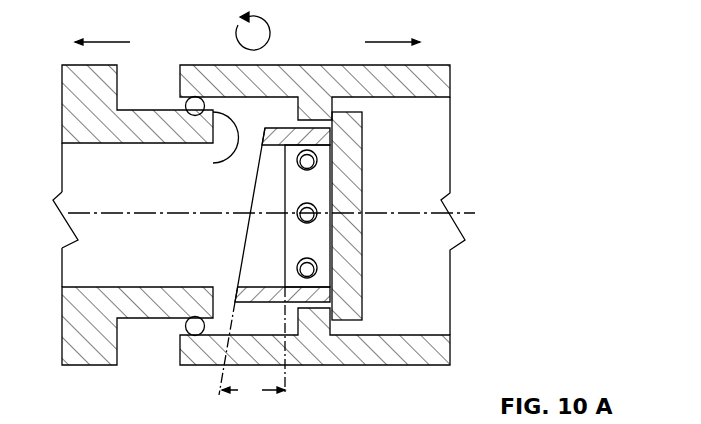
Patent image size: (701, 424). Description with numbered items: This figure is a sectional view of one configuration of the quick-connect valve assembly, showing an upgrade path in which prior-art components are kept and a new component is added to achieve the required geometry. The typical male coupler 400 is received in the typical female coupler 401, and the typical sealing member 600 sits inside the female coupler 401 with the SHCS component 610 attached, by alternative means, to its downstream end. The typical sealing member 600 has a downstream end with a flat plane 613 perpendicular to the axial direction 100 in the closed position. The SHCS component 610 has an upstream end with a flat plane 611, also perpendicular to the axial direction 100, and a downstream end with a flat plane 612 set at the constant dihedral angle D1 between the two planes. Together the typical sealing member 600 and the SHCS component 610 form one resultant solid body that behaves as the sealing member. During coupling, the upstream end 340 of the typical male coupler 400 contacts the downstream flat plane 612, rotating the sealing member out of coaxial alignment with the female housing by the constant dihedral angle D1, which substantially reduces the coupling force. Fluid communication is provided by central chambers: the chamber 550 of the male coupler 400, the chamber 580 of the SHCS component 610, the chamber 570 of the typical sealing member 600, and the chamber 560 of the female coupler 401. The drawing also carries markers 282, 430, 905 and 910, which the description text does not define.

The axial direction 100 is at (44, 216).
The bolt interface 282 is at (284, 238).
The upstream end 340 is at (214, 165).
The typical male coupler 400 is at (137, 215).
The typical female coupler 401 is at (322, 215).
The rotation direction 430 is at (253, 31).
The central chamber of the typical male coupler 550 is at (111, 195).
The central chamber of the typical female coupler 560 is at (424, 196).
The central chamber of the typical sealing member 570 is at (321, 196).
The central chamber of the SHCS component 580 is at (271, 232).
The typical sealing member 600 is at (350, 151).
The SHCS component 610 is at (270, 194).
The flat plane 611 is at (288, 275).
The flat plane 612 is at (242, 254).
The flat plane 613 is at (342, 283).
The first direction 905 is at (103, 42).
The second direction 910 is at (395, 42).
The constant dihedral angle D1 is at (252, 342).